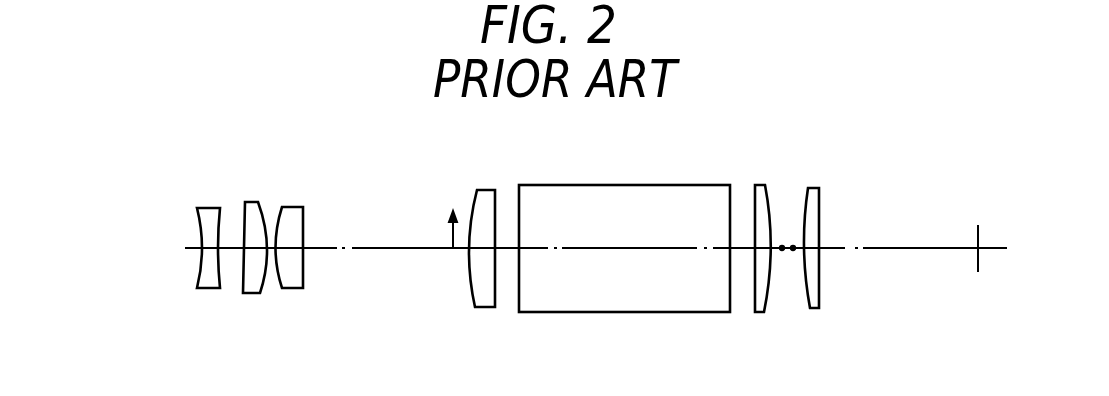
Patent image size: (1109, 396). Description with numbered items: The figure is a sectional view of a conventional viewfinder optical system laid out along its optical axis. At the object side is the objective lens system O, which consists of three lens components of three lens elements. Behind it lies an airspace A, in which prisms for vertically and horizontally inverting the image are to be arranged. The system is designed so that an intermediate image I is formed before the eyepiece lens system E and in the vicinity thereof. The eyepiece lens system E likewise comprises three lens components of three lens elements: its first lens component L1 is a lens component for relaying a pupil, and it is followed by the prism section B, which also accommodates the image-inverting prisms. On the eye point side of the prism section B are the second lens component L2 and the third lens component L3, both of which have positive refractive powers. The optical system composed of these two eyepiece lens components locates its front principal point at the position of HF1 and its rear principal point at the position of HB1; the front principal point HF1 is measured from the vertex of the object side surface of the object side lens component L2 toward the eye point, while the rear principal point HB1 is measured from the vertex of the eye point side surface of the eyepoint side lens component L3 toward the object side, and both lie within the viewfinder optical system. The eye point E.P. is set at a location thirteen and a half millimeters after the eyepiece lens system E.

The objective lens system O is at (312, 339).
The airspace A is at (443, 339).
The intermediate image I is at (452, 232).
The eyepiece lens system E is at (462, 163).
The first lens component L1 is at (484, 300).
The prism section B is at (735, 339).
The second lens component L2 is at (763, 315).
The third lens component L3 is at (813, 313).
The front principal point HF1 is at (782, 246).
The rear principal point HB1 is at (793, 250).
The eye point E.P. is at (984, 264).